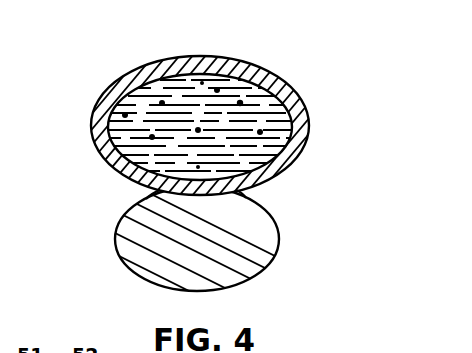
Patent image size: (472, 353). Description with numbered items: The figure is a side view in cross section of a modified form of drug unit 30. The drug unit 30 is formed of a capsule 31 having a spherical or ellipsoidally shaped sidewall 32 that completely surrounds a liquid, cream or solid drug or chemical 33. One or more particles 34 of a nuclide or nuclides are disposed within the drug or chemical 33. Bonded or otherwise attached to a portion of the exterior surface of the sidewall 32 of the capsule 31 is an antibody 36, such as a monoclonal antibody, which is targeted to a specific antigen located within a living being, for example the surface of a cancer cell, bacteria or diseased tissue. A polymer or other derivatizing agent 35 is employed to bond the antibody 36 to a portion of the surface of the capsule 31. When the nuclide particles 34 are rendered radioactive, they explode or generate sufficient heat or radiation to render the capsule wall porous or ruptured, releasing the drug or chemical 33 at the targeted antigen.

The drug unit 30 is at (127, 57).
The capsule 31 is at (92, 110).
The sidewall 32 is at (103, 160).
The drug or chemical 33 is at (258, 148).
The particles of a nuclide 34 is at (236, 125).
The derivatizing agent 35 is at (237, 193).
The antibody 36 is at (260, 240).